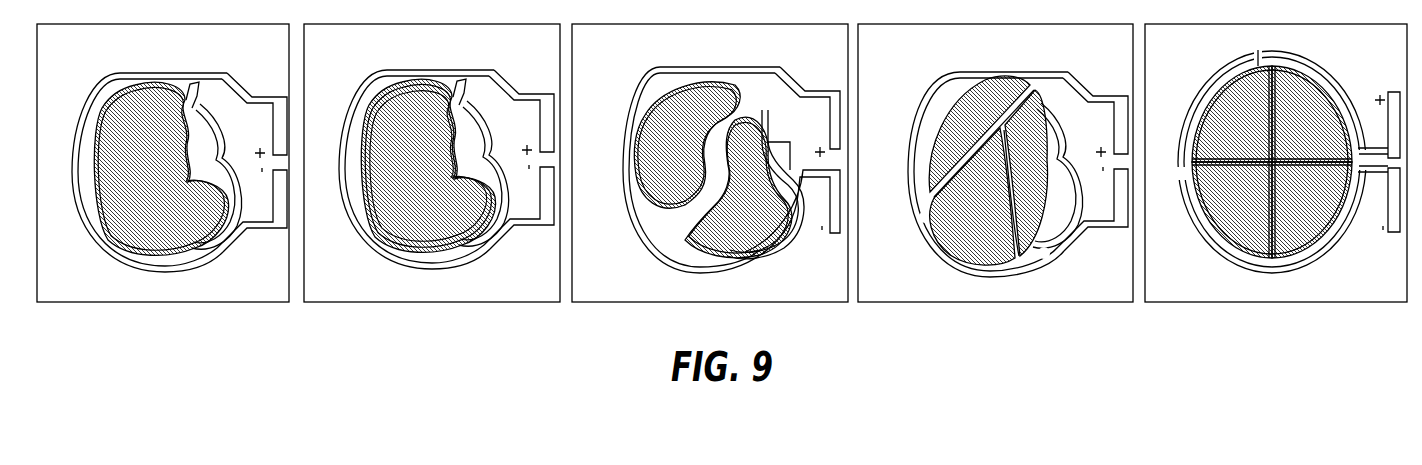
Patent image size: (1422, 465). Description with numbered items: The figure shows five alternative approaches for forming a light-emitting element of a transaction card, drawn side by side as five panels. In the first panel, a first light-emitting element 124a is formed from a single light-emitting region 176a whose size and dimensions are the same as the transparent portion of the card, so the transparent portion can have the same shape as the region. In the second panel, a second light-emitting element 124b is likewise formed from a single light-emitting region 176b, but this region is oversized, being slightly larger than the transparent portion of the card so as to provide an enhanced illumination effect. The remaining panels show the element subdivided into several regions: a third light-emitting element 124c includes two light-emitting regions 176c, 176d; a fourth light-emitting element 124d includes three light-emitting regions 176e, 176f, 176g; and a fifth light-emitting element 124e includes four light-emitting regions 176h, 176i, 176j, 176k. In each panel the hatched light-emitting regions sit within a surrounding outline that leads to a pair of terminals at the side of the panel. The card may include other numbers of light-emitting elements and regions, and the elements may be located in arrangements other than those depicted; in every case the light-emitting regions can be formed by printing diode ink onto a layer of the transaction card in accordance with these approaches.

The first light-emitting element 124a is at (236, 295).
The second light-emitting element 124b is at (506, 295).
The third light-emitting element 124c is at (794, 295).
The fourth light-emitting element 124d is at (1079, 295).
The fifth light-emitting element 124e is at (1351, 295).
The light-emitting region 176a is at (125, 149).
The light-emitting region 176b is at (401, 153).
The light-emitting region 176c is at (652, 166).
The light-emitting region 176d is at (702, 223).
The light-emitting region 176e is at (959, 115).
The light-emitting region 176f is at (952, 213).
The light-emitting region 176g is at (1004, 171).
The light-emitting region 176h is at (1214, 135).
The light-emitting region 176i is at (1291, 140).
The light-emitting region 176j is at (1214, 205).
The light-emitting region 176k is at (1291, 200).